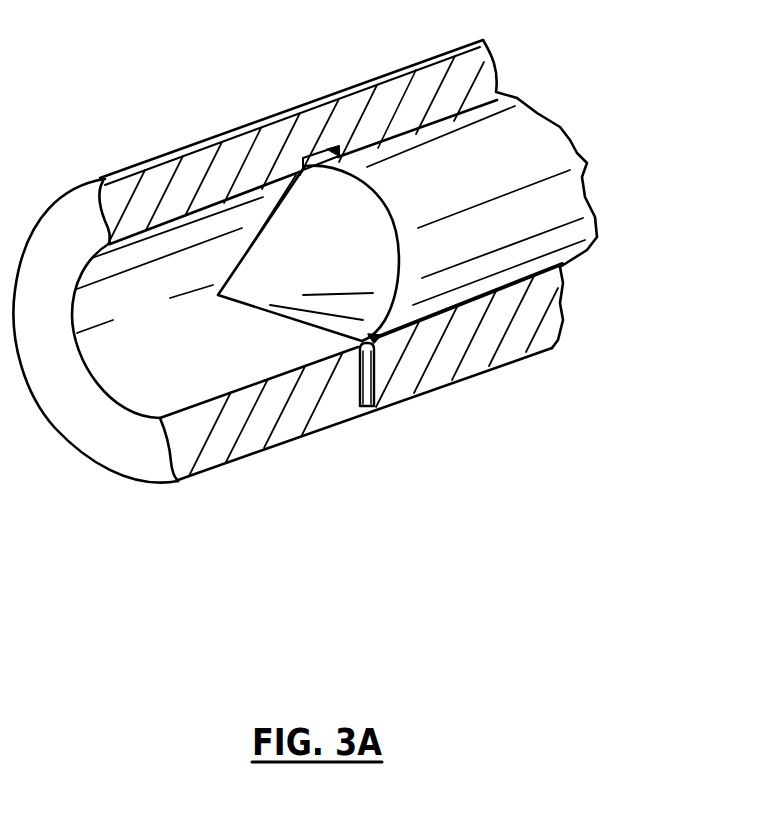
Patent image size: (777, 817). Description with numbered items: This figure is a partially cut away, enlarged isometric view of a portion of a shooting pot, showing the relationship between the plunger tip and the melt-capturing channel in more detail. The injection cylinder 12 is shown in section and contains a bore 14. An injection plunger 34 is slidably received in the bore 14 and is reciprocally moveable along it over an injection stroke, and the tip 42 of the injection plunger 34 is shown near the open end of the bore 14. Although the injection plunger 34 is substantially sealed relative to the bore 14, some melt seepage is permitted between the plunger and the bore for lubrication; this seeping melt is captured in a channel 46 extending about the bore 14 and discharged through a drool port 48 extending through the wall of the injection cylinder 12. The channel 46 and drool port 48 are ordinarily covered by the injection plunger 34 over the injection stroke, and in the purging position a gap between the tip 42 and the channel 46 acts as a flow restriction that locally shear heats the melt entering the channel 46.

The injection cylinder 12 is at (546, 328).
The bore 14 is at (163, 330).
The injection plunger 34 is at (535, 151).
The tip 42 is at (222, 284).
The channel 46 is at (377, 343).
The drool port 48 is at (366, 406).